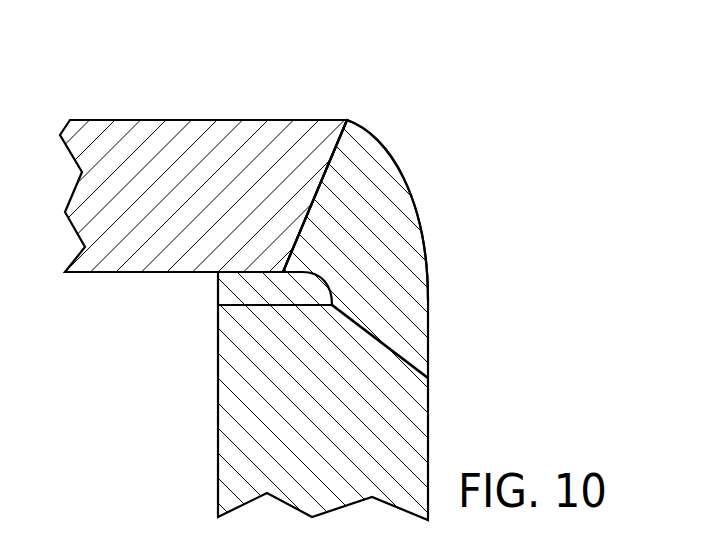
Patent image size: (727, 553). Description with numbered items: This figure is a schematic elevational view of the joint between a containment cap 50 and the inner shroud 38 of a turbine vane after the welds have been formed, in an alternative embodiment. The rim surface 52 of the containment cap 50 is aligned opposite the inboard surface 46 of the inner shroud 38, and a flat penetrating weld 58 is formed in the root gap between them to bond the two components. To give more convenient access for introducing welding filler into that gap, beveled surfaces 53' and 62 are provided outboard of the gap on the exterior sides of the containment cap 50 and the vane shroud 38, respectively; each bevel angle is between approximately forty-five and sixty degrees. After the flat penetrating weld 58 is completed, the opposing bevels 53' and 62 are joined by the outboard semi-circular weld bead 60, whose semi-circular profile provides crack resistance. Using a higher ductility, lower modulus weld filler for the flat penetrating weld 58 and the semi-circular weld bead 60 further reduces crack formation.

The containment cap 50 is at (113, 155).
The rim surface 52 is at (139, 272).
The beveled surface 53' is at (385, 182).
The semi-circular weld bead 60 is at (417, 218).
The beveled surface 62 is at (380, 340).
The inner shroud 38 is at (393, 408).
The flat penetrating weld 58 is at (258, 286).
The inboard surface 46 is at (300, 299).